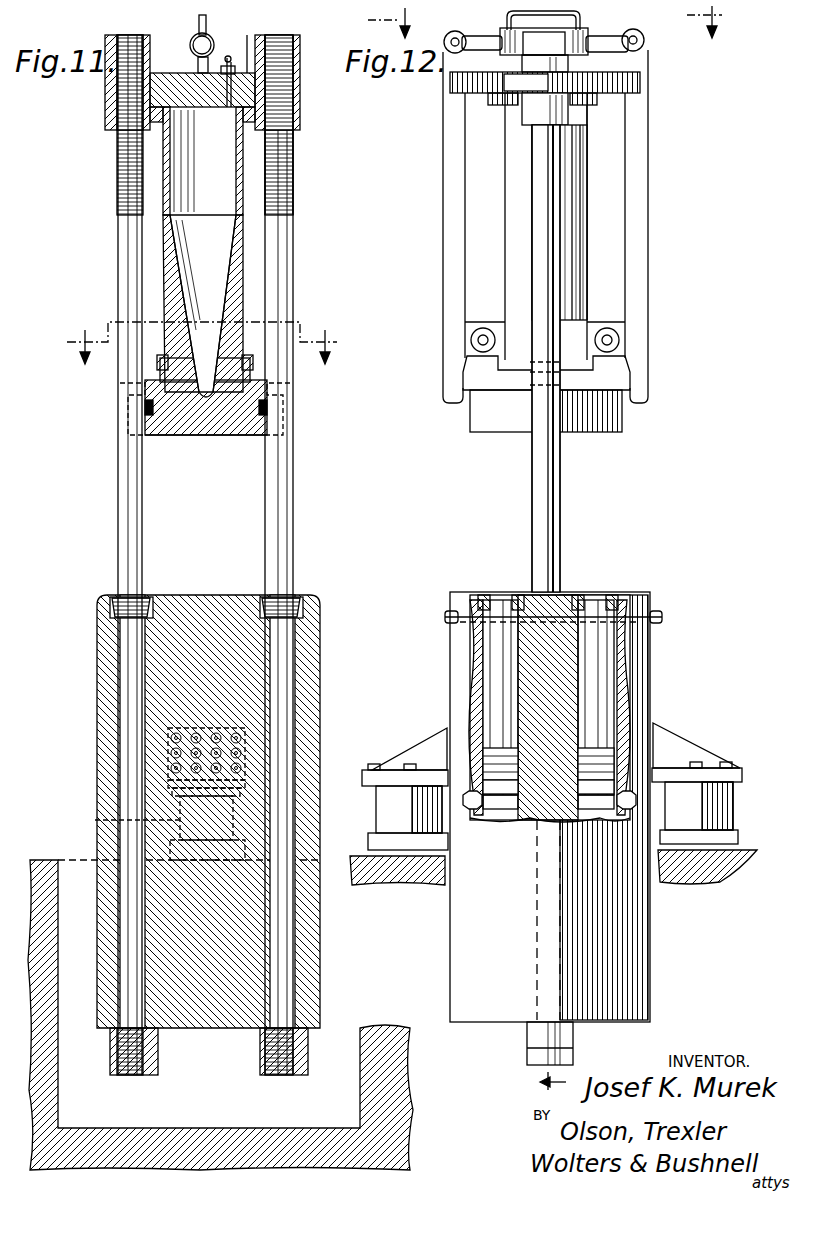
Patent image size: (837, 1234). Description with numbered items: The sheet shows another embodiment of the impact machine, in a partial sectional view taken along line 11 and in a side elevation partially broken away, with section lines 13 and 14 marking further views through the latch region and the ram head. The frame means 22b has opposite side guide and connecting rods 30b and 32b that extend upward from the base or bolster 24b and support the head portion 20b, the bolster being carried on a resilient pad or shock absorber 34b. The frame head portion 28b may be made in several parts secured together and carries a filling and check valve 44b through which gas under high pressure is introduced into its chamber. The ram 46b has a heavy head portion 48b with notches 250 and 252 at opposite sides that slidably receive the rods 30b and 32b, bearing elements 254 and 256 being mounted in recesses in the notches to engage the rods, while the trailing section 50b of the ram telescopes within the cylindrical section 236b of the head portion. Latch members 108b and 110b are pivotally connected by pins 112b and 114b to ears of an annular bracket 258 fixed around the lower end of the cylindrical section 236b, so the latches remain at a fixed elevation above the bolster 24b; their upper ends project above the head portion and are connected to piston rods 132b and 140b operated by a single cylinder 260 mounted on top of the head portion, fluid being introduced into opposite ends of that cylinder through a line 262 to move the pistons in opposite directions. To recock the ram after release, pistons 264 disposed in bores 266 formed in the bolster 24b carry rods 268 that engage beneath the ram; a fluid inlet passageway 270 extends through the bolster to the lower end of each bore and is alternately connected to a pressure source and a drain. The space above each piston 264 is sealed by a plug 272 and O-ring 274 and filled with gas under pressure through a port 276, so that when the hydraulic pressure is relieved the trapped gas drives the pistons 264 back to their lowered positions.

In FIG. 11, the head portion 20b is at (325, 268).
In FIG. 11, the frame means 22b is at (303, 210).
In FIG. 11, the base or bolster 24b is at (318, 632).
In FIG. 12, the base or bolster 24b is at (648, 632).
In FIG. 11, the frame head portion 28b is at (247, 36).
In FIG. 11, the guide and connecting rod 30b is at (117, 500).
In FIG. 11, the guide and connecting rod 32b is at (293, 500).
In FIG. 12, the guide and connecting rod 32b is at (540, 490).
In FIG. 11, the resilient pad or shock absorber 34b is at (145, 794).
In FIG. 12, the resilient pad or shock absorber 34b is at (382, 815).
In FIG. 11, the filling and check valve 44b is at (222, 60).
In FIG. 11, the ram 46b is at (245, 441).
In FIG. 12, the ram 46b is at (605, 434).
In FIG. 11, the head portion of the ram 48b is at (160, 436).
In FIG. 12, the head portion of the ram 48b is at (503, 424).
In FIG. 11, the trailing section of the ram 50b is at (232, 276).
In FIG. 12, the latch member 108b is at (447, 257).
In FIG. 12, the latch member 110b is at (638, 222).
In FIG. 12, the pin 112b is at (470, 340).
In FIG. 12, the pin 114b is at (620, 340).
In FIG. 12, the piston rod 132b is at (484, 40).
In FIG. 12, the piston rod 140b is at (605, 50).
In FIG. 11, the cylindrical section 236b is at (248, 178).
In FIG. 12, the cylindrical section 236b is at (575, 192).
In FIG. 11, the notch 250 is at (143, 401).
In FIG. 11, the notch 252 is at (265, 405).
In FIG. 11, the bearing element 254 is at (147, 408).
In FIG. 11, the bearing element 256 is at (267, 413).
In FIG. 12, the annular bracket 258 is at (592, 330).
In FIG. 11, the cylinder 260 is at (192, 38).
In FIG. 12, the cylinder 260 is at (520, 55).
In FIG. 11, the line 262 is at (206, 24).
In FIG. 12, the line 262 is at (544, 41).
In FIG. 12, the piston 264 is at (610, 768).
In FIG. 12, the bore or cylinder 266 is at (622, 706).
In FIG. 12, the piston rod 268 is at (598, 682).
In FIG. 12, the fluid inlet passageway 270 is at (475, 800).
In FIG. 12, the plug 272 is at (618, 592).
In FIG. 12, the O-ring 274 is at (572, 592).
In FIG. 12, the port 276 is at (650, 592).
In FIG. 12, the section line 11 is at (562, 22).
In FIG. 12, the section line 13 is at (569, 20).
In FIG. 11, the section line 14 is at (202, 332).